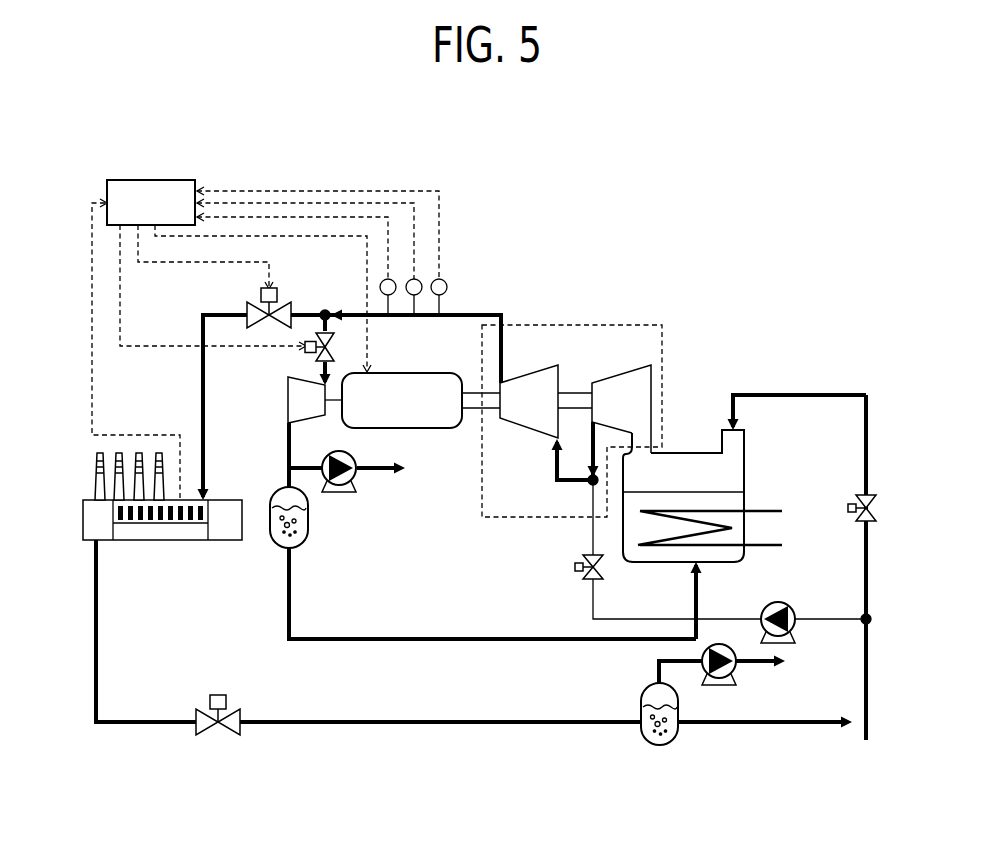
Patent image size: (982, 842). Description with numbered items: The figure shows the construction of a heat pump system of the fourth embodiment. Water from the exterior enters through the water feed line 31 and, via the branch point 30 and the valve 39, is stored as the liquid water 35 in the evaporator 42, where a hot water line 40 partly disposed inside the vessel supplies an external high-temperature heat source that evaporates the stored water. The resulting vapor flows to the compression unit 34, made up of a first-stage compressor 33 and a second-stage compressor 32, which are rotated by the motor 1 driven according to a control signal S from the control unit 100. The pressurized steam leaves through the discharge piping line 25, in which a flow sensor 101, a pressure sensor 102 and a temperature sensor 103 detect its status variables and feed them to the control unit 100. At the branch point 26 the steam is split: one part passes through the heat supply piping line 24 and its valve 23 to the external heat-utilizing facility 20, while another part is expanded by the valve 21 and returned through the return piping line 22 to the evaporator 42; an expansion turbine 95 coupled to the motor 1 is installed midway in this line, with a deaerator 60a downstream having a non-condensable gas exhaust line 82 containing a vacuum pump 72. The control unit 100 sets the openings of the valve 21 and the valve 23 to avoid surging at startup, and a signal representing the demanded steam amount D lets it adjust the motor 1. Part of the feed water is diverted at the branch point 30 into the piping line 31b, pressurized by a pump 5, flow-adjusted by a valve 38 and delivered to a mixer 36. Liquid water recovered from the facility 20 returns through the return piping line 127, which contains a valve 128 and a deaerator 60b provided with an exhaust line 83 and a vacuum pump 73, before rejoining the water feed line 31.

The control unit 100 is at (152, 180).
The pressure sensor 102 is at (419, 277).
The flow sensor 101 is at (379, 282).
The temperature sensor 103 is at (445, 281).
The discharge piping line 25 is at (486, 313).
The valve 23 is at (260, 293).
The control signal S is at (291, 236).
The branch point 26 is at (325, 312).
The motor 1 is at (418, 372).
The compression unit 34 is at (600, 313).
The second-stage compressor 32 is at (527, 376).
The first-stage compressor 33 is at (614, 375).
The valve 21 is at (303, 346).
The steam amount D is at (92, 345).
The heat supply piping line 24 is at (201, 397).
The expansion turbine 95 is at (287, 405).
The mixer 36 is at (590, 484).
The evaporator 42 is at (747, 474).
The hot water line 40 is at (775, 510).
The valve 39 is at (878, 508).
The vacuum pump 72 is at (338, 493).
The non-condensable gas exhaust line 82 is at (378, 478).
The deaerator 60a is at (311, 530).
The external heat-utilizing facility 20 is at (157, 542).
The valve 38 is at (577, 568).
The liquid water 35 is at (715, 555).
The pump 5 is at (778, 600).
The piping line 31b is at (832, 616).
The branch point 30 is at (870, 619).
The return piping line 22 is at (398, 636).
The water feed line 31 is at (868, 646).
The valve 128 is at (218, 695).
The return piping line 127 is at (375, 720).
The deaerator 60b is at (641, 700).
The vacuum pump 73 is at (718, 685).
The exhaust line 83 is at (755, 665).